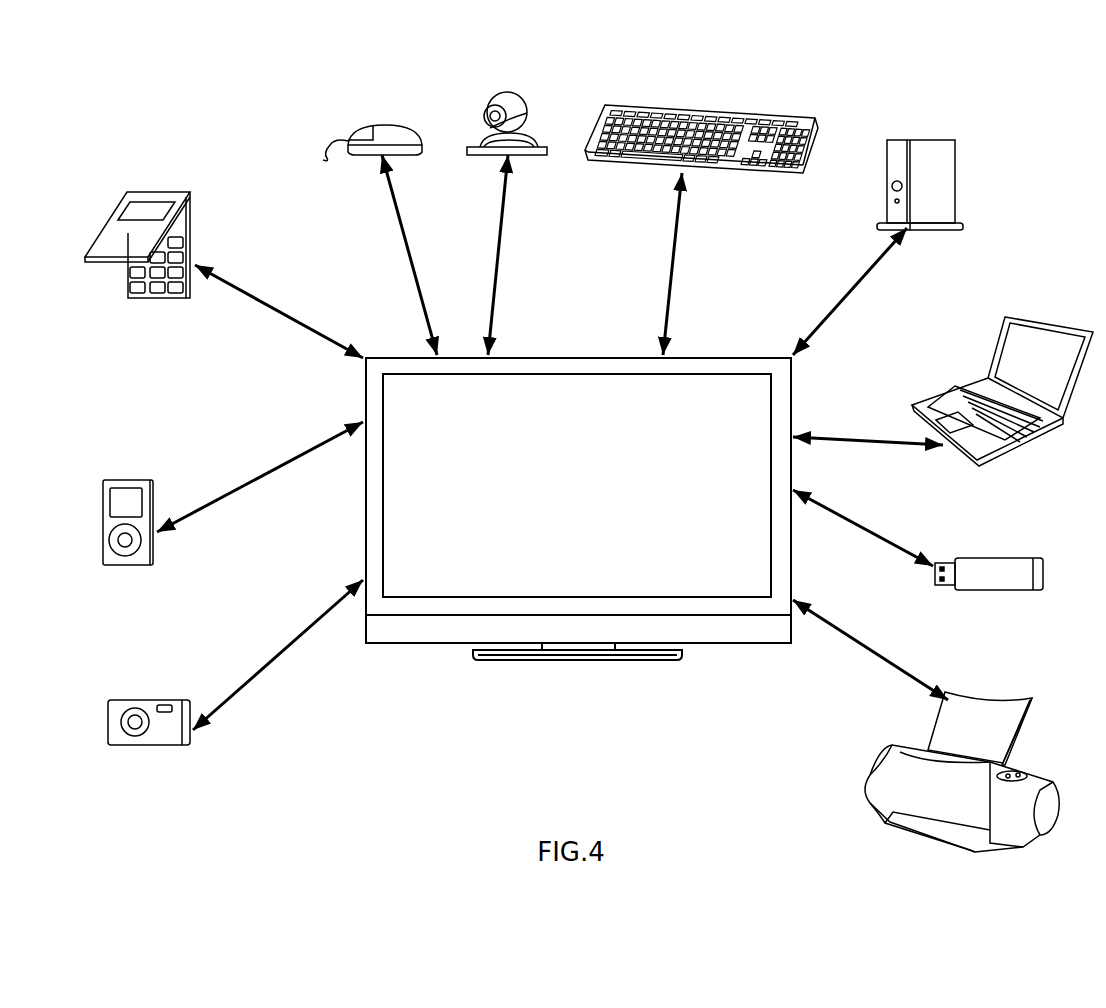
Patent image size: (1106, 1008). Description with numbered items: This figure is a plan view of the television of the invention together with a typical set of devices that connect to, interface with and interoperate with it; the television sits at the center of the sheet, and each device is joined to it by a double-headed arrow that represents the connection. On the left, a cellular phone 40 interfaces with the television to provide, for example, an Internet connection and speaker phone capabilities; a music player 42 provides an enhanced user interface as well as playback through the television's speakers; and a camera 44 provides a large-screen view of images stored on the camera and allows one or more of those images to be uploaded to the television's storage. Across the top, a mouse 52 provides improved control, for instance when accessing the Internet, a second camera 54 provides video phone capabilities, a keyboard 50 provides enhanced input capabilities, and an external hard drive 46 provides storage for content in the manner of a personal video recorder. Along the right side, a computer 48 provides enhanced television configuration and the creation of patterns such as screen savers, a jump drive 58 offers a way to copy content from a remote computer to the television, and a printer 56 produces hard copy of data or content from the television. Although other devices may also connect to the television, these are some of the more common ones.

The cellular phone 40 is at (172, 192).
The music player 42 is at (138, 480).
The camera 44 is at (165, 700).
The external hard drive 46 is at (957, 142).
The computer 48 is at (1018, 318).
The keyboard 50 is at (700, 112).
The mouse 52 is at (390, 125).
The camera 54 is at (527, 107).
The printer 56 is at (992, 700).
The jump drive 58 is at (990, 558).